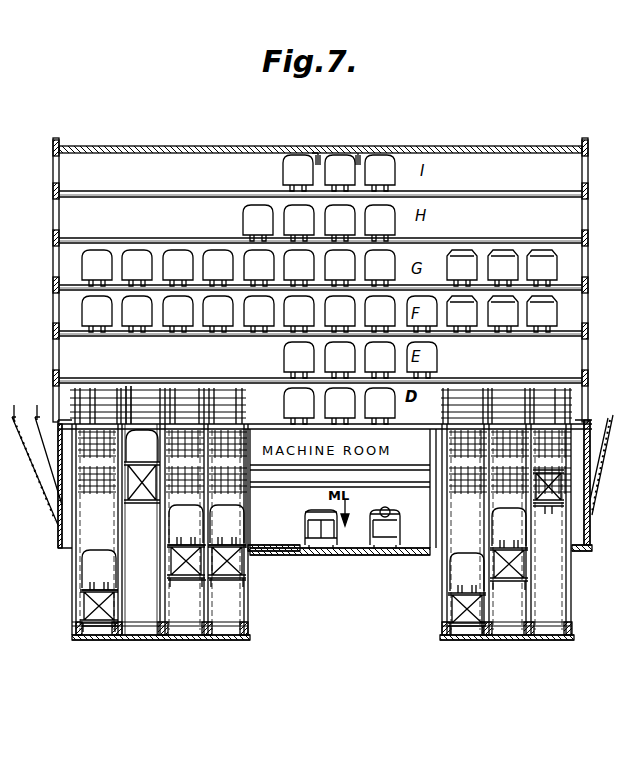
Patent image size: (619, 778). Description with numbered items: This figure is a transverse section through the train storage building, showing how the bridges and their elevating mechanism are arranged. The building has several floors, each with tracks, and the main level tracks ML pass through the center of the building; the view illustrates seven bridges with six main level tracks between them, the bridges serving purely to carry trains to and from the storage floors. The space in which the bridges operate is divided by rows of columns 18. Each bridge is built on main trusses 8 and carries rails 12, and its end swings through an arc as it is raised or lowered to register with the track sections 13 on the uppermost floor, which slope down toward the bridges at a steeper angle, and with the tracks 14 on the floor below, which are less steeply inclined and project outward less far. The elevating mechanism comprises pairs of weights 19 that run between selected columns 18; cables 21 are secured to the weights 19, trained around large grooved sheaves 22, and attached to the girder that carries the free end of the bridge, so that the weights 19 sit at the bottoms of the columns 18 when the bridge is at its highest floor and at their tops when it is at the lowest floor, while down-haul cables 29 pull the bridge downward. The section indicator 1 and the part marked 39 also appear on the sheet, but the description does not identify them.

The section line 1- 1 is at (214, 116).
The main trusses 8 is at (137, 356).
The rails 12 is at (226, 540).
The track sections 13 is at (248, 426).
The tracks 14 is at (268, 492).
The columns 18 is at (118, 530).
The weights 19 is at (76, 458).
The cables 21 is at (160, 510).
The grooved sheaves 22 is at (112, 392).
The down-haul cables 29 is at (204, 610).
The center post 39 is at (124, 392).